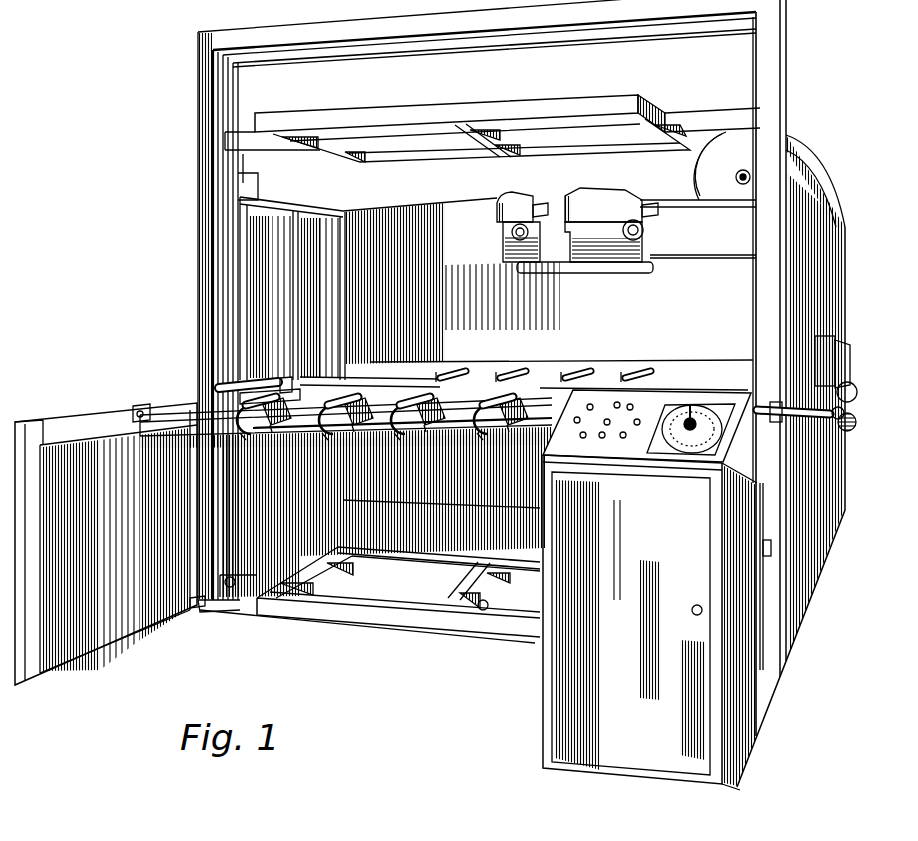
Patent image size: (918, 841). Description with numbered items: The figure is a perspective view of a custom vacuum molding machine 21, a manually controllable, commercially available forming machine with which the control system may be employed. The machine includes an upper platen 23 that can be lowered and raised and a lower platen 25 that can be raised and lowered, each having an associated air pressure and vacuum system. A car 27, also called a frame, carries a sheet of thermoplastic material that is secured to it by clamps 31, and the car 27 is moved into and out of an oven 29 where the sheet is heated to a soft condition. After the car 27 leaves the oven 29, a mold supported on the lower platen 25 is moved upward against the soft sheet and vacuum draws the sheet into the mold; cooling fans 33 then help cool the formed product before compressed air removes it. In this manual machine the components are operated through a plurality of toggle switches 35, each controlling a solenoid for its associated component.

The custom vacuum molding machine 21 is at (150, 258).
The upper platen 23 is at (707, 108).
The lower platen 25 is at (433, 638).
The car 27 is at (220, 414).
The oven 29 is at (683, 372).
The clamps 31 is at (217, 387).
The cooling fans 33 is at (590, 192).
The toggle switches 35 is at (605, 413).